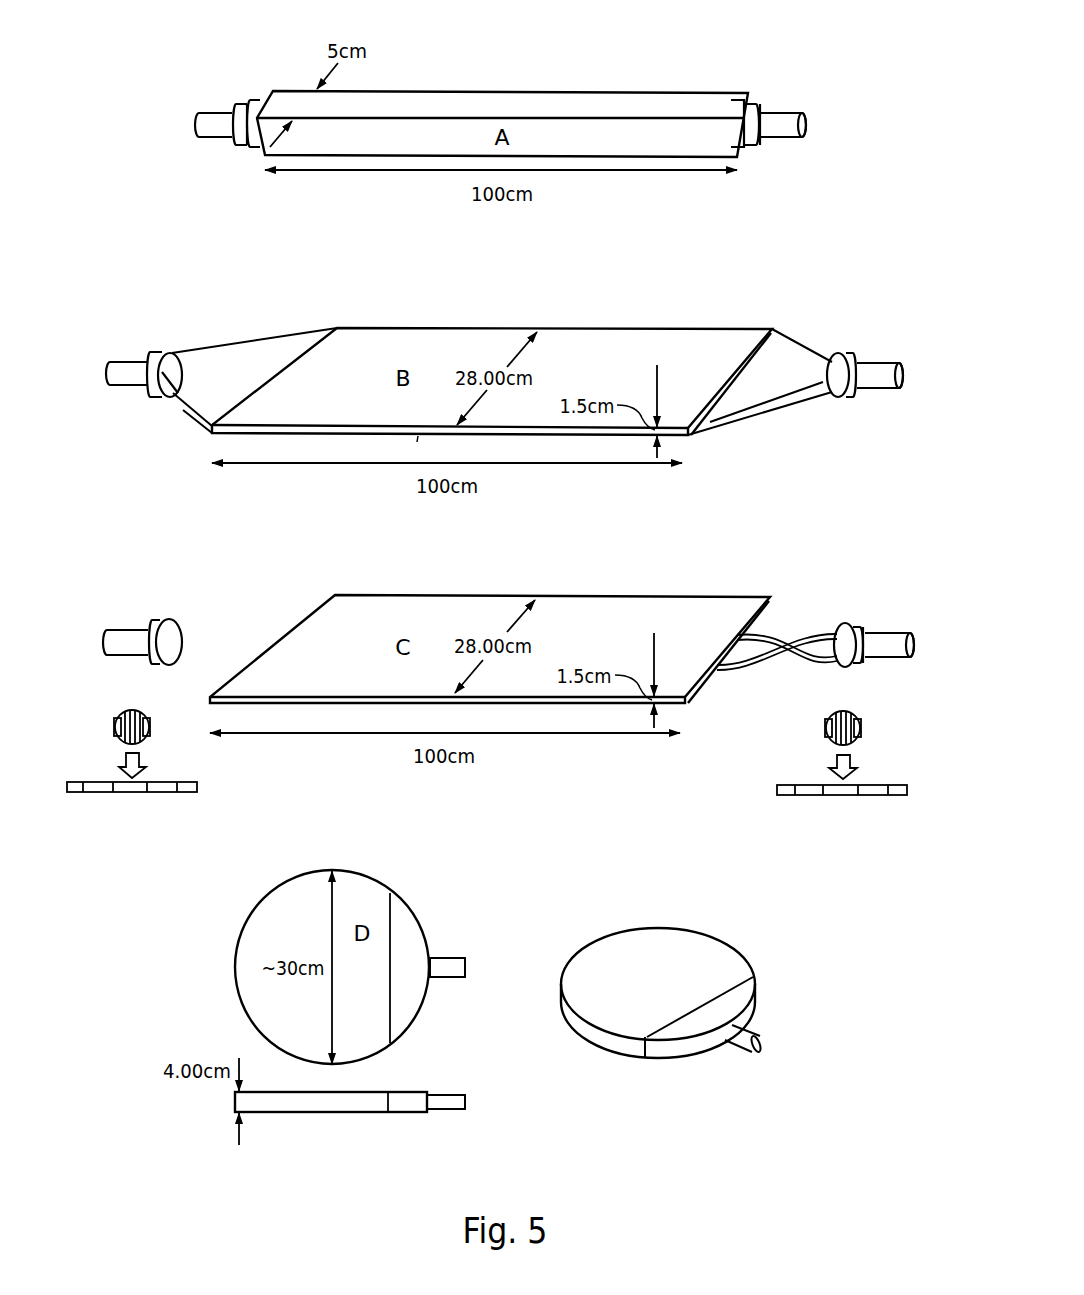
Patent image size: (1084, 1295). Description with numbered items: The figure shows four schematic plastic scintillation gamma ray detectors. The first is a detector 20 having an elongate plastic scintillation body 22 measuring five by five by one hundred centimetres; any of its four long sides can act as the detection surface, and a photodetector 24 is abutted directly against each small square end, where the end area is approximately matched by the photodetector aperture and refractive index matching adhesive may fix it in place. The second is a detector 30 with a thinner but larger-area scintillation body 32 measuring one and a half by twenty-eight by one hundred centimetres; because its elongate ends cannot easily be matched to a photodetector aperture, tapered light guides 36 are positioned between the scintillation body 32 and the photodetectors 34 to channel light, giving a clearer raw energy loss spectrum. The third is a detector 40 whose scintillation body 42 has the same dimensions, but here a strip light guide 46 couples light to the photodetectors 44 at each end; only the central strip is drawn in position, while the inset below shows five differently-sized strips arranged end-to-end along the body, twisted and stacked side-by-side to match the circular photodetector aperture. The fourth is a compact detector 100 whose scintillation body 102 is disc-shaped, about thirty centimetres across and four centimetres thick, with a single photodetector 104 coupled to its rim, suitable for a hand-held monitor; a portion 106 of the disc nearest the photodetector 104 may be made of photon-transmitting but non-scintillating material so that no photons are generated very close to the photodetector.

In FIG. 5A, the detector 20 is at (499, 106).
In FIG. 5A, the plastic scintillation body 22 is at (710, 98).
In FIG. 5A, the photodetector 24 is at (212, 138).
In FIG. 5B, the detector 30 is at (502, 358).
In FIG. 5B, the scintillation body 32 is at (473, 335).
In FIG. 5B, the photodetector 34 is at (125, 388).
In FIG. 5B, the tapered light guide 36 is at (218, 352).
In FIG. 5C, the detector 40 is at (505, 619).
In FIG. 5C, the scintillation body 42 is at (472, 602).
In FIG. 5C, the photodetector 44 is at (123, 657).
In FIG. 5C, the strip light guide 46 is at (742, 667).
In FIG. 5D, the detector 100 is at (678, 987).
In FIG. 5D, the scintillation body 102 is at (587, 958).
In FIG. 5D, the photodetector 104 is at (753, 1023).
In FIG. 5D, the portion 106 is at (683, 1047).